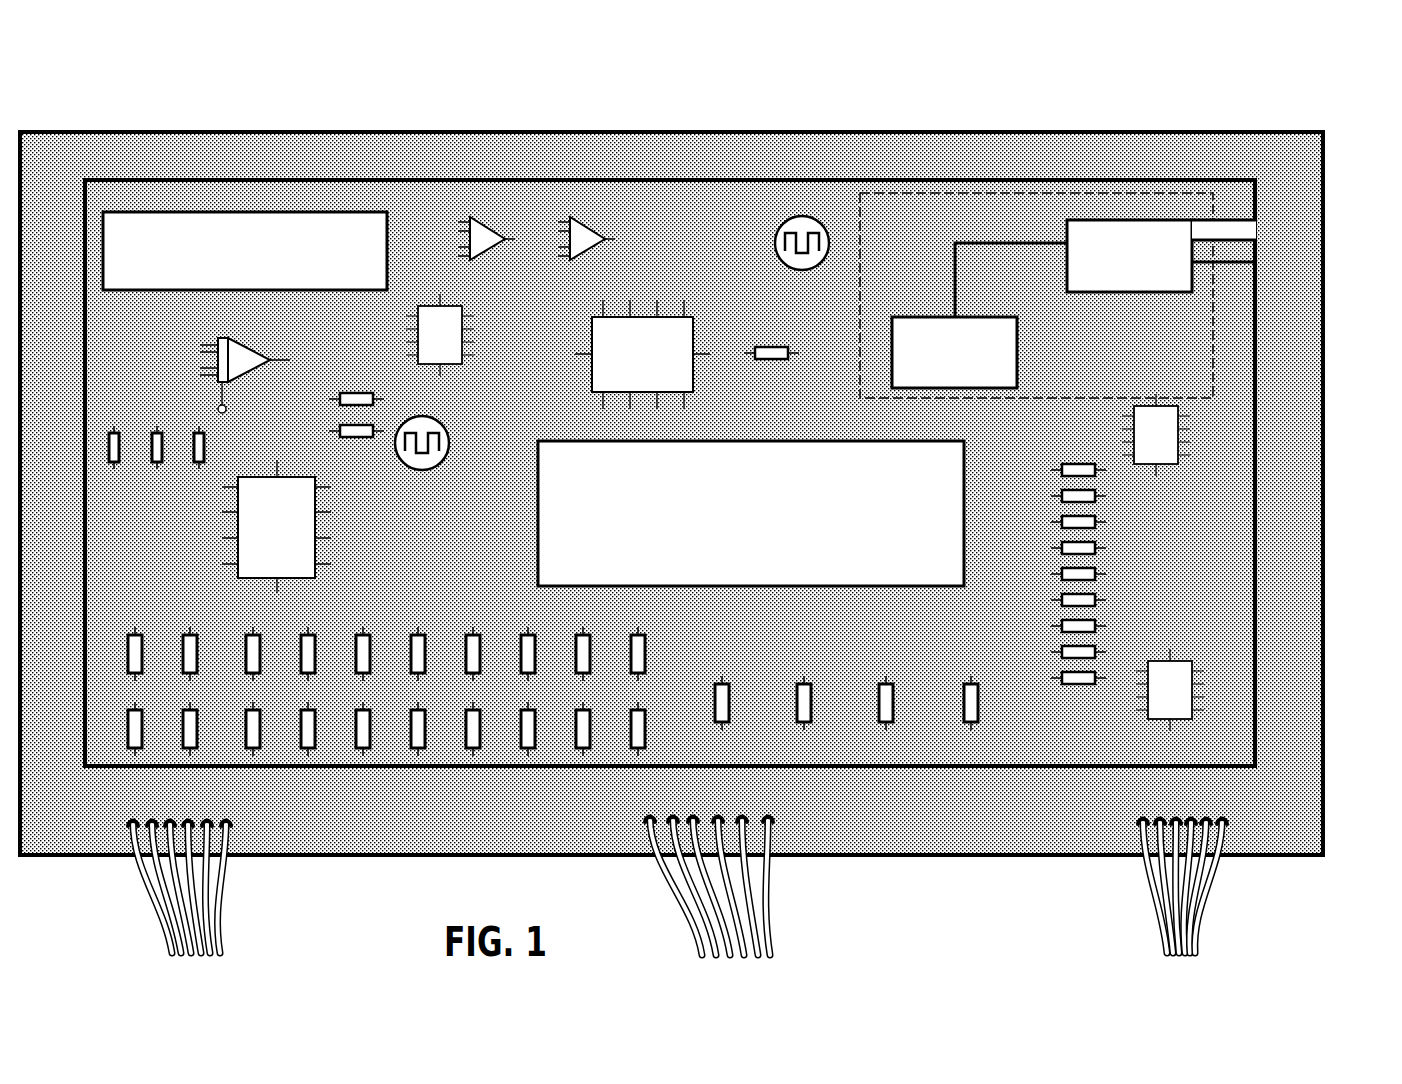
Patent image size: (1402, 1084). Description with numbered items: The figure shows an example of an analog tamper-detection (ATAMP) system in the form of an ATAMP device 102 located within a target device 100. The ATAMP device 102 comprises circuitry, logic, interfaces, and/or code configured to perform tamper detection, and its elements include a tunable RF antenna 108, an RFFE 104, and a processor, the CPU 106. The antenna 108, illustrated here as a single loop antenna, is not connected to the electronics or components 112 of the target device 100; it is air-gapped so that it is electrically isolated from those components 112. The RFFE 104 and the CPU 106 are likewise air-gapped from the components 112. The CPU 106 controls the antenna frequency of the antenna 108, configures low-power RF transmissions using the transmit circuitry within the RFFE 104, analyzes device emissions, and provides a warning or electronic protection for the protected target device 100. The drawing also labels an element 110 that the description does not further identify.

The target device 100 is at (1258, 101).
The ATAMP device 102 is at (1135, 193).
The RFFE 104 is at (1194, 222).
The CPU 106 is at (1017, 340).
The tunable RF antenna 108 is at (1257, 298).
The housing 110 is at (1323, 393).
The components 112 is at (1085, 713).